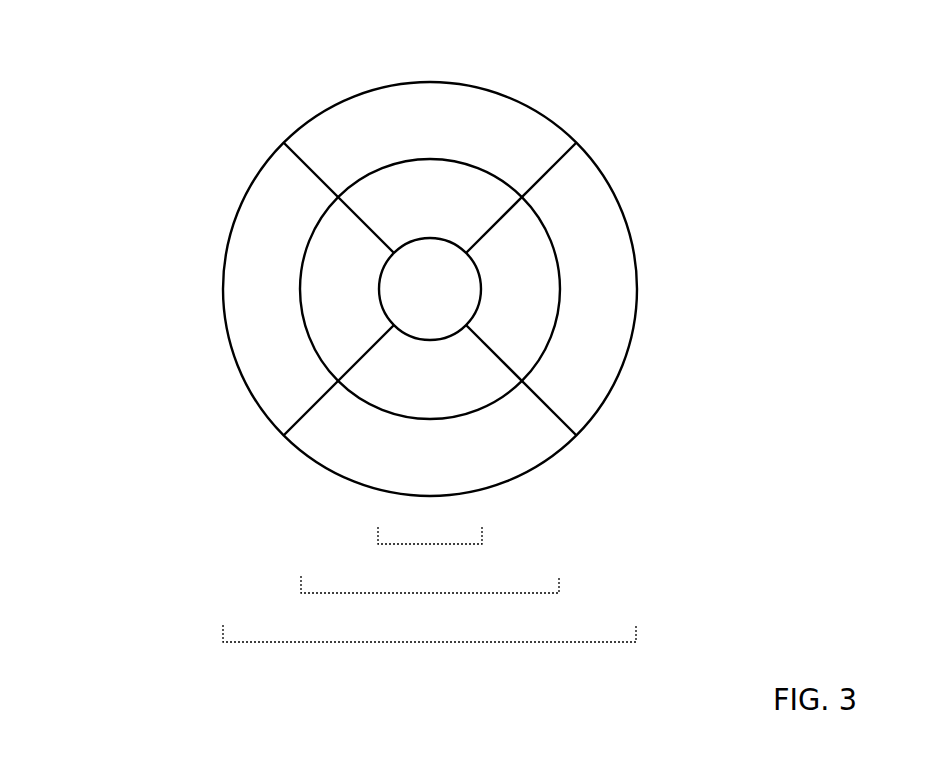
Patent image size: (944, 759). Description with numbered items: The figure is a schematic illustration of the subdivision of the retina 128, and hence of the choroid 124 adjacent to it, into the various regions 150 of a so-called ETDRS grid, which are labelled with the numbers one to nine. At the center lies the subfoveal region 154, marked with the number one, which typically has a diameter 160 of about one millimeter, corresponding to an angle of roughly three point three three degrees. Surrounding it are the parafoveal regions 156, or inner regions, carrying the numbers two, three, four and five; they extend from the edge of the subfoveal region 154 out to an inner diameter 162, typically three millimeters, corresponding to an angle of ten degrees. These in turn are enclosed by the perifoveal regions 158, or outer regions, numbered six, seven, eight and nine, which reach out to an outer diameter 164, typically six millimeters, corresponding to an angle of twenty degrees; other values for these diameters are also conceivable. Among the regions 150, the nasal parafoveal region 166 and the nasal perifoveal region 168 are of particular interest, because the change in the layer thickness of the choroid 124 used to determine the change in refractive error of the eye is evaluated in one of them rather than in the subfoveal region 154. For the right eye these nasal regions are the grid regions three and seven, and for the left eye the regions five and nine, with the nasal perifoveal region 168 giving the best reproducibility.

The choroid 124 is at (513, 265).
The retina 128 is at (674, 170).
The regions 150 is at (384, 118).
The subfoveal region 154 is at (397, 300).
The parafoveal regions 156 is at (454, 178).
The perifoveal regions 158 is at (493, 442).
The nasal parafoveal region 166 is at (333, 255).
The nasal perifoveal region 168 is at (245, 285).
The diameter 160 is at (482, 535).
The inner diameter 162 is at (559, 583).
The outer diameter 164 is at (636, 633).